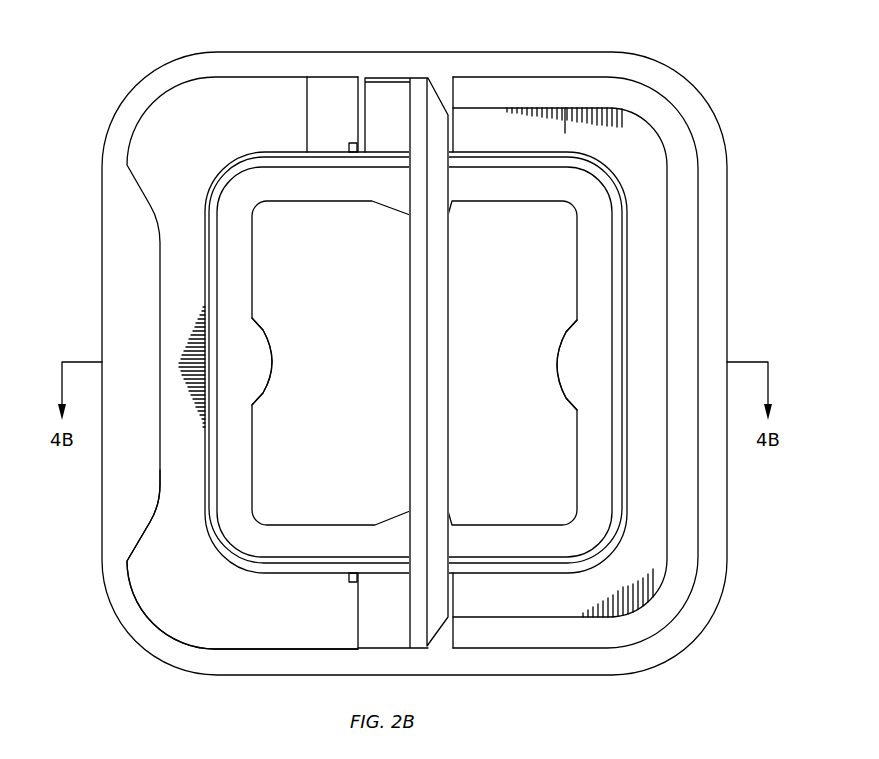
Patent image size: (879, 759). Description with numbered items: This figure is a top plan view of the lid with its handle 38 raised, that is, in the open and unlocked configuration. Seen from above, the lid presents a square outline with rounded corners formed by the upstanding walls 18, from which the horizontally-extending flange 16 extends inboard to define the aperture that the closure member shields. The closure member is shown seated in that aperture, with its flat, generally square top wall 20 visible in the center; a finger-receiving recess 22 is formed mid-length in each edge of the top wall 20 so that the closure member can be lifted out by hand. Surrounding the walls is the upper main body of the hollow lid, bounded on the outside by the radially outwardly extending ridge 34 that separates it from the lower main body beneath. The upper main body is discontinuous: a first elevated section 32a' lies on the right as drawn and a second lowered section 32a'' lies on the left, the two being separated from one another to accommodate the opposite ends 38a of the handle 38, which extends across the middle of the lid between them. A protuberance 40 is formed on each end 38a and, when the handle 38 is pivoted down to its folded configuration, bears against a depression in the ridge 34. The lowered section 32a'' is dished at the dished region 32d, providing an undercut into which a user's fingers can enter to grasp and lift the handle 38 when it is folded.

The flange 16 is at (546, 538).
The upstanding walls 18 is at (231, 177).
The top wall 20 is at (358, 414).
The finger-receiving recess 22 is at (396, 213).
The first elevated section 32a' is at (628, 362).
The second lowered section 32a'' is at (212, 560).
The dished region 32d is at (152, 293).
The ridge 34 is at (687, 102).
The handle 38 is at (417, 113).
The opposite ends of handle 38a is at (388, 613).
The protuberance 40 is at (352, 580).